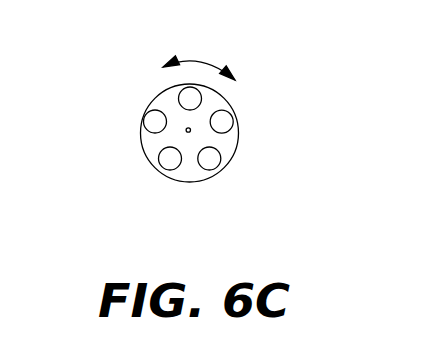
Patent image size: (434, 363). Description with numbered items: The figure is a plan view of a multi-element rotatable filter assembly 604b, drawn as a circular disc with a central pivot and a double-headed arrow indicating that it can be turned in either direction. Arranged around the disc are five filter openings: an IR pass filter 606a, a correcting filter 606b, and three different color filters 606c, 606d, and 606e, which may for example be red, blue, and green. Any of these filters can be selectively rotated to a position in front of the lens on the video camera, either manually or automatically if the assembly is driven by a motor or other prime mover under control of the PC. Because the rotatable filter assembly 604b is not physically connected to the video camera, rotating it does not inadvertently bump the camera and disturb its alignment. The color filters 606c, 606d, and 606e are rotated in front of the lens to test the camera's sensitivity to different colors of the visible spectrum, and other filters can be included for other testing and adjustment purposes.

The multi-element rotatable filter assembly 604b is at (239, 138).
The IR pass filter 606a is at (224, 122).
The correcting filter 606b is at (217, 160).
The color filter 606c is at (190, 99).
The color filter 606d is at (156, 122).
The color filter 606e is at (167, 161).